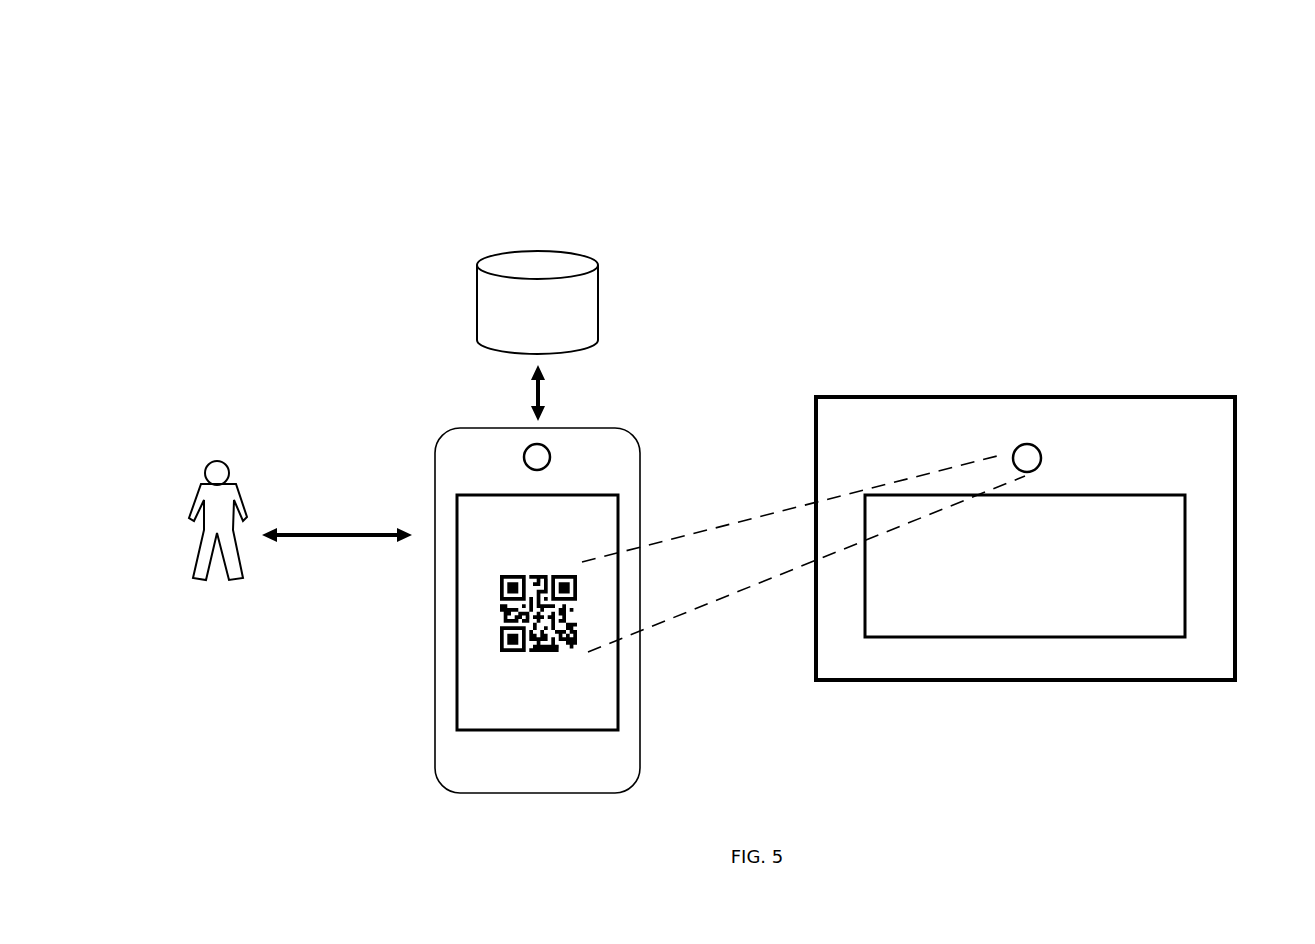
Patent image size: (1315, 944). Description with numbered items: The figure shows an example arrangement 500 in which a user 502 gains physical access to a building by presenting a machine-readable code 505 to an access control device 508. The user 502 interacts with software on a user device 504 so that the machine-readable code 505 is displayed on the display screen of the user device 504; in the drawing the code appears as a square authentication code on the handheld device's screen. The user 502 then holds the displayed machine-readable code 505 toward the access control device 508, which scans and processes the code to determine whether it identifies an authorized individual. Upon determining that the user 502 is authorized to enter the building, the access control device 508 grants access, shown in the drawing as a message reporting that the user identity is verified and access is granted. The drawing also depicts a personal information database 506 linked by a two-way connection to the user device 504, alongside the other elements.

The user identity verification system 500 is at (185, 90).
The user 502 is at (186, 486).
The user device 504 is at (646, 465).
The machine-readable code 505 is at (625, 597).
The personal information database 506 is at (498, 250).
The access control device 508 is at (1238, 473).